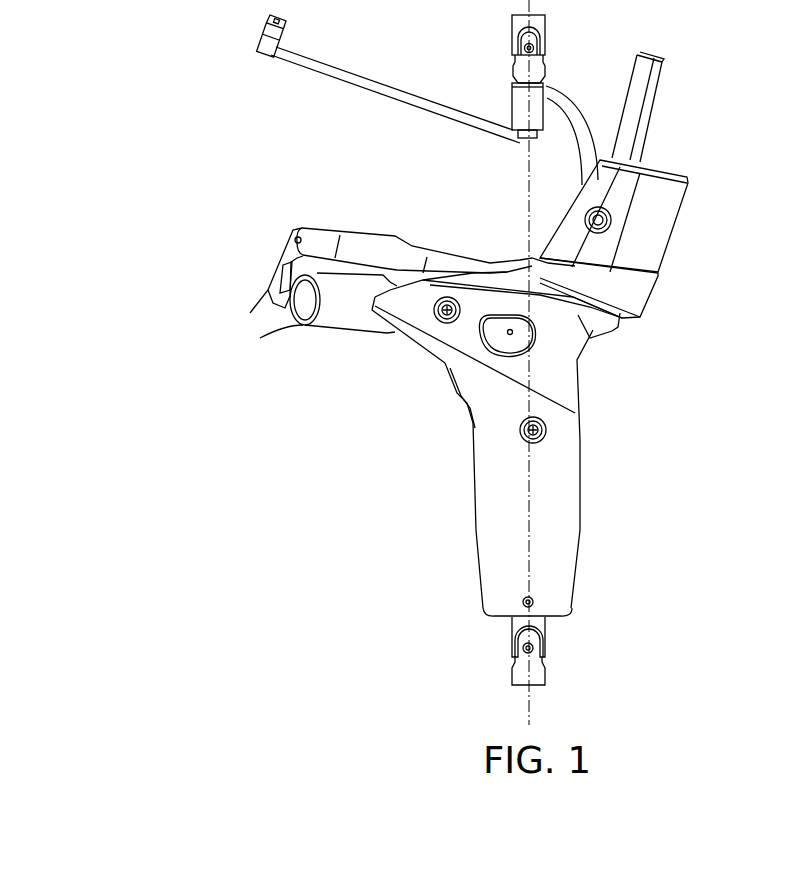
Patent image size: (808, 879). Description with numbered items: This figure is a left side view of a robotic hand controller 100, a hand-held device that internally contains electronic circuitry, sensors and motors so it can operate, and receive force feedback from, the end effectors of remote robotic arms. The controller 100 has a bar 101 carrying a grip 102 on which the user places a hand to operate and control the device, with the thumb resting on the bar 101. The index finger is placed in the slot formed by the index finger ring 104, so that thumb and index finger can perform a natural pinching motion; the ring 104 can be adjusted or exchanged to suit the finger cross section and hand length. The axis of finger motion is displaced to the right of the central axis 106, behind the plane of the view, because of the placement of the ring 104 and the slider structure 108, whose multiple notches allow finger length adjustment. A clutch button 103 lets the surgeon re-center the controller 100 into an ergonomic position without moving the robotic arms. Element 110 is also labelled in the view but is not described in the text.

The robotic hand controller 100 is at (777, 651).
The bar 101 is at (580, 442).
The grip 102 is at (470, 493).
The clutch button 103 is at (467, 418).
The index finger ring 104 is at (297, 330).
The central axis 106 is at (527, 171).
The slider structure 108 is at (267, 296).
The aperture 110 is at (510, 332).